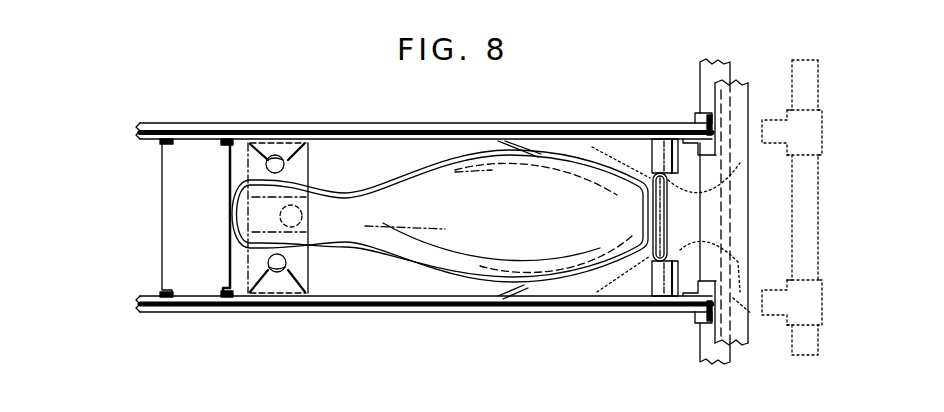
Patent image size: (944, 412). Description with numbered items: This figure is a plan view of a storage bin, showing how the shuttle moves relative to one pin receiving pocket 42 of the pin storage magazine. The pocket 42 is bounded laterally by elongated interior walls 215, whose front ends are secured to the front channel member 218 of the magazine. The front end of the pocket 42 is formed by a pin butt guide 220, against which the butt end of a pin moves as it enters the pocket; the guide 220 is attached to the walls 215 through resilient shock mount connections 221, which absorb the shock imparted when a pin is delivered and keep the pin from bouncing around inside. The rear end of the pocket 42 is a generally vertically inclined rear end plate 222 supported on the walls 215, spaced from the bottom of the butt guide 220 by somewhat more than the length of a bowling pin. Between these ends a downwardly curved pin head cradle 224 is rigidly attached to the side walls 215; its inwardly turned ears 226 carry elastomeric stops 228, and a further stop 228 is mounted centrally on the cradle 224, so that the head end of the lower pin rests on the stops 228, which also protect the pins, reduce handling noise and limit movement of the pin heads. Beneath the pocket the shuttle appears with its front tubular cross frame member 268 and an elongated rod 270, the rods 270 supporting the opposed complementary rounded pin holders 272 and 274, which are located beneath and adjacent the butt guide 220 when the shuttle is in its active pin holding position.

The pin receiving pocket 42 is at (410, 152).
The elongated interior wall 215 is at (192, 134).
The front channel member 218 is at (744, 250).
The pin butt guide 220 is at (665, 197).
The resilient shock mount connection 221 is at (664, 150).
The rear end plate 222 is at (165, 200).
The pin head cradle 224 is at (310, 275).
The inwardly turned ear 226 is at (304, 153).
The elastomeric stop 228 is at (272, 170).
The front tubular cross frame member 268 is at (731, 73).
The elongated rod 270 is at (137, 137).
The pin holder 272 is at (545, 147).
The pin holder 274 is at (520, 290).